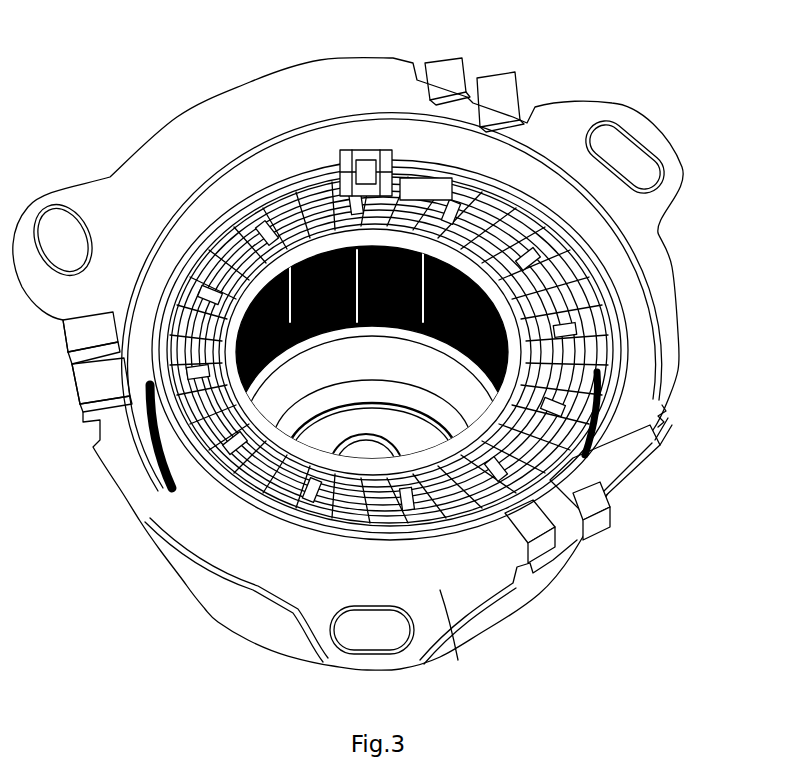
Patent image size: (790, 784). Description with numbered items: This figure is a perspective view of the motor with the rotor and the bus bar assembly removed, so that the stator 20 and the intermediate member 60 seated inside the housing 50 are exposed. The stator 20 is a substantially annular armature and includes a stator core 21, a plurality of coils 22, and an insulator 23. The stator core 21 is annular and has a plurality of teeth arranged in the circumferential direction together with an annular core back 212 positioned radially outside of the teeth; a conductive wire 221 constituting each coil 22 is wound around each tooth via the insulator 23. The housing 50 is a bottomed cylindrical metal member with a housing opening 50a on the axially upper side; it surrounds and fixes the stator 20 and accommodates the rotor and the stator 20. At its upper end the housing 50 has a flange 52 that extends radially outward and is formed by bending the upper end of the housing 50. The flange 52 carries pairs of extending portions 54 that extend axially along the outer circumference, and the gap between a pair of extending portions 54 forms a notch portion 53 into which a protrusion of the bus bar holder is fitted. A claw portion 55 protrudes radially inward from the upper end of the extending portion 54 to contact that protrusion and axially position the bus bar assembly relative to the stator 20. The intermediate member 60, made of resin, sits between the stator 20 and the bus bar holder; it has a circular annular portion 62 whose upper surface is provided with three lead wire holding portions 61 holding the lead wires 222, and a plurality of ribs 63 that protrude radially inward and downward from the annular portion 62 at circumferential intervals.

The stator 20 is at (485, 230).
The stator core 21 is at (143, 300).
The core back 212 is at (133, 428).
The coil 22 is at (307, 527).
The conductive wire 221 is at (257, 477).
The lead wire 222 is at (347, 170).
The insulator 23 is at (263, 243).
The housing 50 is at (522, 598).
The housing opening 50a is at (583, 222).
The flange 52 is at (458, 660).
The notch portion 53 is at (598, 502).
The extending portion 54 is at (553, 527).
The claw portion 55 is at (612, 452).
The intermediate member 60 is at (360, 549).
The lead wire holding portion 61 is at (330, 177).
The annular portion 62 is at (583, 390).
The rib 63 is at (577, 335).